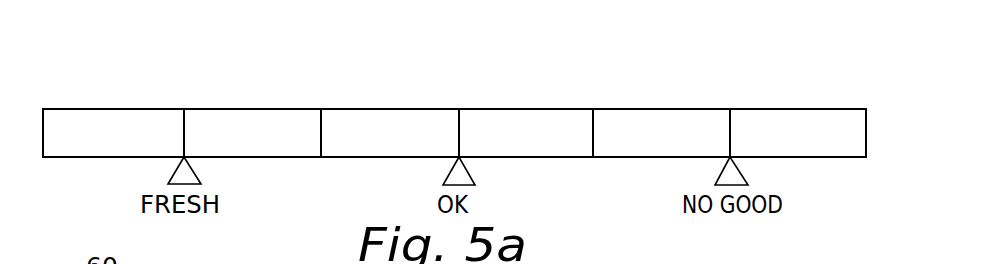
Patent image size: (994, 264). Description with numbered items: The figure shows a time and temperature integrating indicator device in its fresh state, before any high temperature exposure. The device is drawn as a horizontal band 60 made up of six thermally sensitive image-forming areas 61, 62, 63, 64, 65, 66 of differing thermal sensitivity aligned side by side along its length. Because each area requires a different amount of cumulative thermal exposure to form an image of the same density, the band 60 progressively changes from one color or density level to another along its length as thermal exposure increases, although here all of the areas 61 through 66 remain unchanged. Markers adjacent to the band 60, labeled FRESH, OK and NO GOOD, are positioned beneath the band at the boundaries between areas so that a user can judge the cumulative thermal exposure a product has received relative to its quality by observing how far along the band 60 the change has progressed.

The band 60 is at (84, 100).
The area of differing thermal sensitivity 61 is at (148, 117).
The area of differing thermal sensitivity 62 is at (297, 117).
The area of differing thermal sensitivity 63 is at (427, 117).
The area of differing thermal sensitivity 64 is at (563, 117).
The area of differing thermal sensitivity 65 is at (697, 117).
The area of differing thermal sensitivity 66 is at (838, 117).